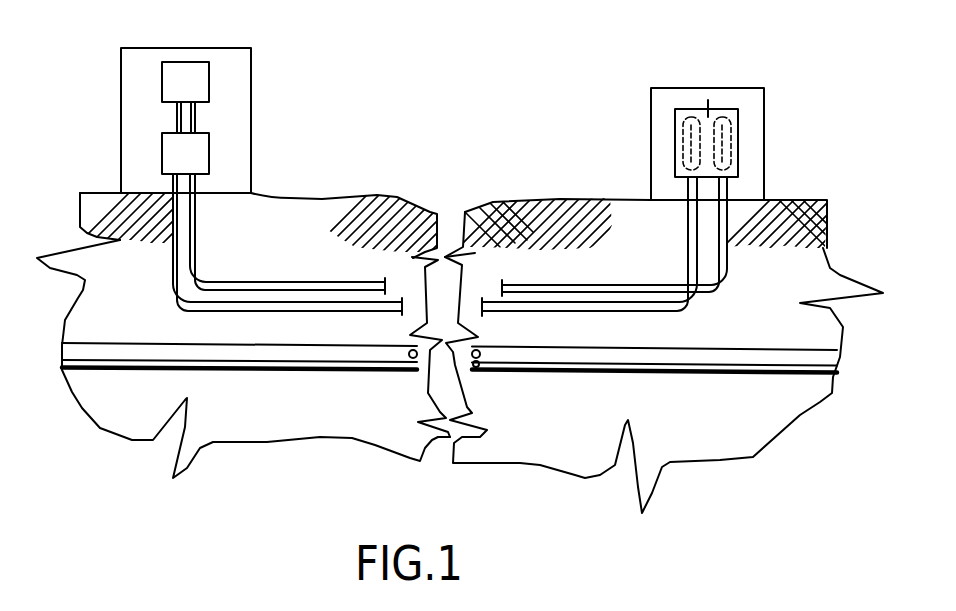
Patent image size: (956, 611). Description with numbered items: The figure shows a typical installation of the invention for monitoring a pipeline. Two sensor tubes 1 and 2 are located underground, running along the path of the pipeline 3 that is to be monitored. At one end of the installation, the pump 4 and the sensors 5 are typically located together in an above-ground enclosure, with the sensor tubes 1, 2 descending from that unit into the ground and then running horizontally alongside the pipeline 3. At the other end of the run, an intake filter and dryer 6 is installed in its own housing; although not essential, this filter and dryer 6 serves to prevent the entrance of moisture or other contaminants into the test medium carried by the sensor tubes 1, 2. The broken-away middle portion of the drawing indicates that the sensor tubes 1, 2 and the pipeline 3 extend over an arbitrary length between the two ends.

The sensor tube 1 is at (240, 283).
The sensor tube 2 is at (270, 302).
The pipeline 3 is at (247, 370).
The pump 4 is at (209, 83).
The sensors 5 is at (209, 152).
The intake filter and dryer 6 is at (711, 88).